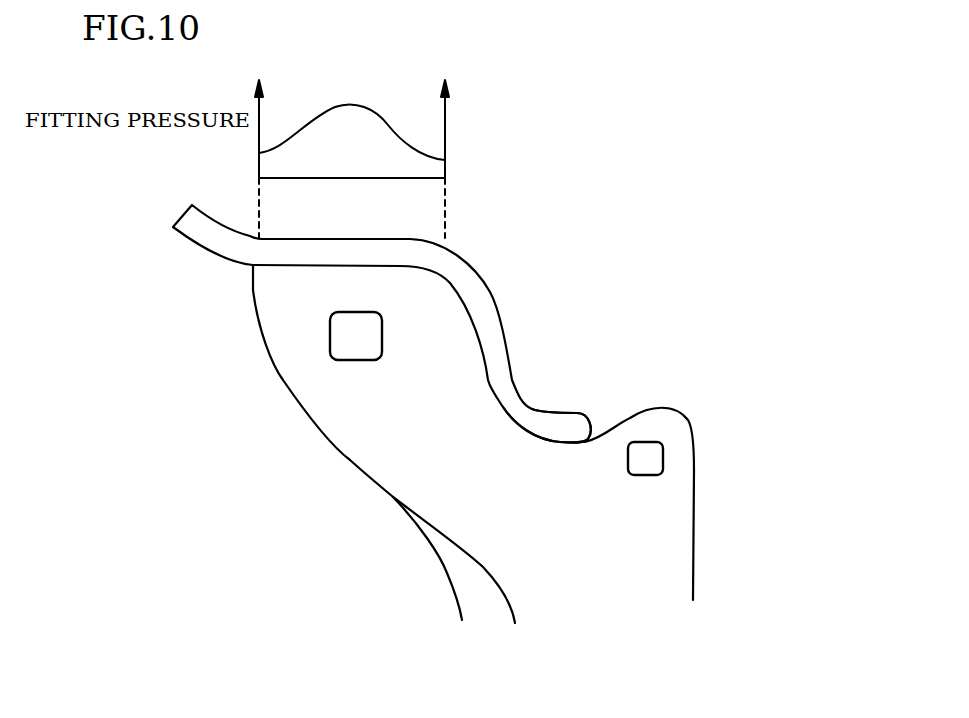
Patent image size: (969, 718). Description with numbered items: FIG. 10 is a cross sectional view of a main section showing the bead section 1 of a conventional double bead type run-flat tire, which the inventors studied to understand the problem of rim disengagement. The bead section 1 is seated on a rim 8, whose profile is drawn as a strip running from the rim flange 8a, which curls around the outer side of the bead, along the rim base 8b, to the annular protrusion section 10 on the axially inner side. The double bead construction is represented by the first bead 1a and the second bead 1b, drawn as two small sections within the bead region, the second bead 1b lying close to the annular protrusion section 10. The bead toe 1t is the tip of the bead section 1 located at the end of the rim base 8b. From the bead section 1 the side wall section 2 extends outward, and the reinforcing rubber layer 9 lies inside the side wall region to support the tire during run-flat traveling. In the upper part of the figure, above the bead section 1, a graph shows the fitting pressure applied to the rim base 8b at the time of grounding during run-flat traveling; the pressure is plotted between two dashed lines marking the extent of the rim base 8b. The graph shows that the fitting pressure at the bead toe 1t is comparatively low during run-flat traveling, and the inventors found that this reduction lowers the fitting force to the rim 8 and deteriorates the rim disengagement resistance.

The bead section 1 is at (214, 339).
The first bead 1a is at (342, 338).
The second bead 1b is at (663, 458).
The bead toe 1t is at (273, 278).
The side wall section 2 is at (722, 550).
The rim 8 is at (193, 248).
The rim flange 8a is at (555, 417).
The rim base 8b is at (367, 243).
The reinforcing rubber layer 9 is at (452, 563).
The annular protrusion section 10 is at (707, 407).